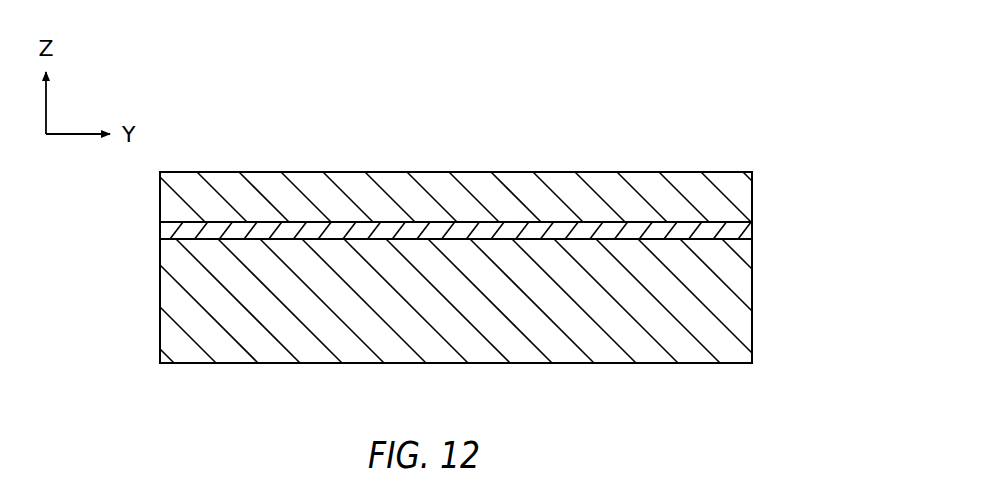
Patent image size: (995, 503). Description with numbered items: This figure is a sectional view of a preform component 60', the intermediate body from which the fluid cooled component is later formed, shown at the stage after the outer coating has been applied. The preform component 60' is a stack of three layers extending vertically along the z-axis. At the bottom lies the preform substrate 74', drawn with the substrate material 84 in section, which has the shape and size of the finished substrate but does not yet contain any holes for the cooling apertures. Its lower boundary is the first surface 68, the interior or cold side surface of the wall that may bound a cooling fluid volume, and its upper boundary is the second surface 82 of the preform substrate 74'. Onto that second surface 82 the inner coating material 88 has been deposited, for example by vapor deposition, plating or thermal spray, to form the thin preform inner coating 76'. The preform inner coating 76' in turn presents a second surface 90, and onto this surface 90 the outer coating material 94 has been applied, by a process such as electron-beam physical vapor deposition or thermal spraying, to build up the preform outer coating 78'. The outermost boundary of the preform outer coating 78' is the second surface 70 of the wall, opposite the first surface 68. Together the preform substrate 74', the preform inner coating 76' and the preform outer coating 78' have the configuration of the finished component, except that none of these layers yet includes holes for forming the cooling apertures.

The preform component 60' is at (444, 241).
The preform outer coating 78' is at (444, 155).
The preform inner coating 76' is at (444, 186).
The preform substrate 74' is at (444, 337).
The outer coating material 94 is at (745, 192).
The inner coating material 88 is at (745, 228).
The third layer material 84 is at (745, 317).
The second surface 70 is at (203, 172).
The second surface of the preform inner coating 90 is at (268, 222).
The second surface of the preform substrate 82 is at (340, 239).
The first surface 68 is at (198, 363).